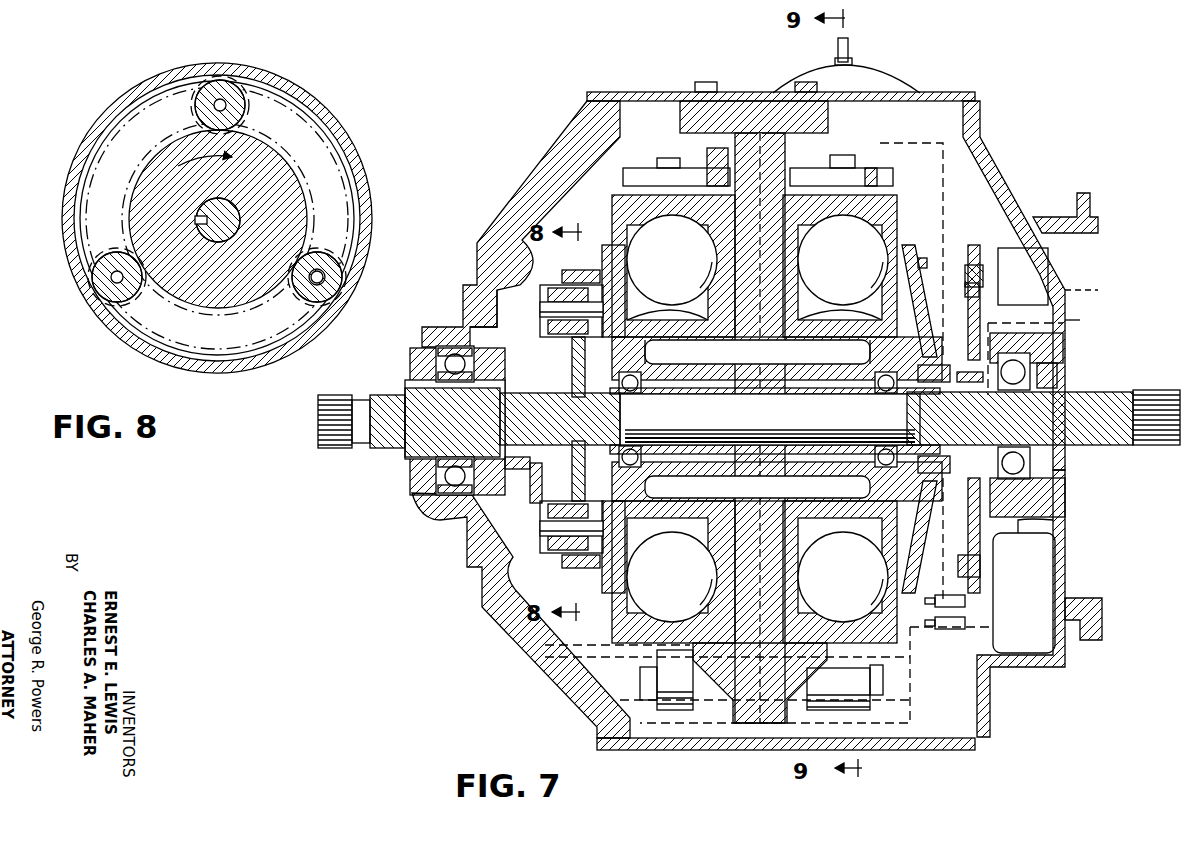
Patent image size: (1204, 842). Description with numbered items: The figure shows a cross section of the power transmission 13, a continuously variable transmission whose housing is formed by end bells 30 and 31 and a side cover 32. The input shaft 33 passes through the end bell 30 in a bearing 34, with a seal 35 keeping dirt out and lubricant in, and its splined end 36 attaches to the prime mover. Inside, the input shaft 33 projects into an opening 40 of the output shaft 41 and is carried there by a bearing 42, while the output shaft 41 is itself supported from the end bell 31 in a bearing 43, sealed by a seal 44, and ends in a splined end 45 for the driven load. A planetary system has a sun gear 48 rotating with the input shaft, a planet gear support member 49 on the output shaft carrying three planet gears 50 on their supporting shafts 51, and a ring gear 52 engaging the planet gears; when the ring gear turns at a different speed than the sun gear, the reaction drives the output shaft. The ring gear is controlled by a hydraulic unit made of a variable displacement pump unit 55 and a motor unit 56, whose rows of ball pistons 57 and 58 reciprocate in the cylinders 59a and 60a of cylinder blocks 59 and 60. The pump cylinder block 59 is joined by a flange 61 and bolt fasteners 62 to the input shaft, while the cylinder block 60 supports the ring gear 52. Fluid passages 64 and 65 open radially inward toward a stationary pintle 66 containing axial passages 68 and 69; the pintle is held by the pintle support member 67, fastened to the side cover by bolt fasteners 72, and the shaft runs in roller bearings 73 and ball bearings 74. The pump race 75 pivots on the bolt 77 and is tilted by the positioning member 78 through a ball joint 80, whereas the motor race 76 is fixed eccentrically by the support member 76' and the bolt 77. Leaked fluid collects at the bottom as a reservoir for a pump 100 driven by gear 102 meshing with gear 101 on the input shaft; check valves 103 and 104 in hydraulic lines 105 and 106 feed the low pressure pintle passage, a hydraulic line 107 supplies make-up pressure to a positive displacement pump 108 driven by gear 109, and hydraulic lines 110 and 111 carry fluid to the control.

In FIG. 7, the power transmission 13 is at (1012, 118).
In FIG. 7, the end bell 30 is at (1065, 505).
In FIG. 7, the end bell 31 is at (502, 630).
In FIG. 7, the side cover 32 is at (633, 92).
In FIG. 8, the input shaft 33 is at (232, 222).
In FIG. 7, the input shaft 33 is at (1110, 370).
In FIG. 7, the bearing 34 is at (1020, 466).
In FIG. 7, the seal 35 is at (1122, 382).
In FIG. 7, the splined end 36 is at (1150, 390).
In FIG. 7, the opening 40 is at (522, 385).
In FIG. 7, the output shaft 41 is at (378, 405).
In FIG. 7, the bearing 42 is at (528, 470).
In FIG. 7, the bearing 43 is at (445, 480).
In FIG. 7, the seal 44 is at (436, 360).
In FIG. 7, the splined end 45 is at (330, 450).
In FIG. 8, the sun gear 48 is at (276, 177).
In FIG. 7, the sun gear 48 is at (560, 419).
In FIG. 7, the planet gear support member 49 is at (530, 508).
In FIG. 8, the planet gears 50 is at (322, 279).
In FIG. 7, the planet gears 50 is at (548, 326).
In FIG. 8, the supporting shafts 51 is at (300, 301).
In FIG. 7, the supporting shafts 51 is at (540, 530).
In FIG. 8, the ring gear 52 is at (342, 148).
In FIG. 7, the ring gear 52 is at (572, 270).
In FIG. 7, the variable displacement pump unit 55 is at (960, 222).
In FIG. 7, the motor unit 56 is at (575, 195).
In FIG. 7, the ball pistons 57 is at (855, 269).
In FIG. 7, the ball pistons 58 is at (684, 269).
In FIG. 7, the pump cylinder block 59 is at (895, 242).
In FIG. 7, the cylinders 59a is at (840, 321).
In FIG. 7, the cylinder block 60 is at (605, 255).
In FIG. 7, the cylinders 60a is at (667, 323).
In FIG. 7, the flange 61 is at (934, 330).
In FIG. 7, the bolt fasteners 62 is at (927, 260).
In FIG. 7, the fluid passages 64 is at (847, 349).
In FIG. 7, the fluid passages 65 is at (661, 349).
In FIG. 7, the pintle 66 is at (770, 395).
In FIG. 7, the pintle support member 67 is at (692, 118).
In FIG. 7, the fluid passage 68 is at (777, 358).
In FIG. 7, the fluid passage 69 is at (777, 481).
In FIG. 7, the bolt fasteners 72 is at (797, 88).
In FIG. 7, the roller bearings 73 is at (884, 393).
In FIG. 7, the ball bearings 74 is at (632, 393).
In FIG. 7, the pump race 75 is at (895, 200).
In FIG. 7, the motor race 76 is at (676, 163).
In FIG. 7, the support member 76' is at (700, 163).
In FIG. 7, the bolt 77 is at (640, 686).
In FIG. 7, the positioning member 78 is at (832, 170).
In FIG. 7, the ball joint 80 is at (882, 158).
In FIG. 7, the pump 100 is at (1045, 555).
In FIG. 7, the gear 101 is at (980, 290).
In FIG. 7, the gear 102 is at (980, 580).
In FIG. 7, the check valve 103 is at (955, 600).
In FIG. 7, the check valve 104 is at (955, 622).
In FIG. 7, the hydraulic line 105 is at (945, 168).
In FIG. 7, the hydraulic line 106 is at (912, 663).
In FIG. 7, the hydraulic line 107 is at (1053, 523).
In FIG. 7, the positive displacement pump 108 is at (1018, 268).
In FIG. 7, the gear 109 is at (975, 265).
In FIG. 7, the hydraulic line 110 is at (1090, 285).
In FIG. 7, the hydraulic line 111 is at (1080, 320).